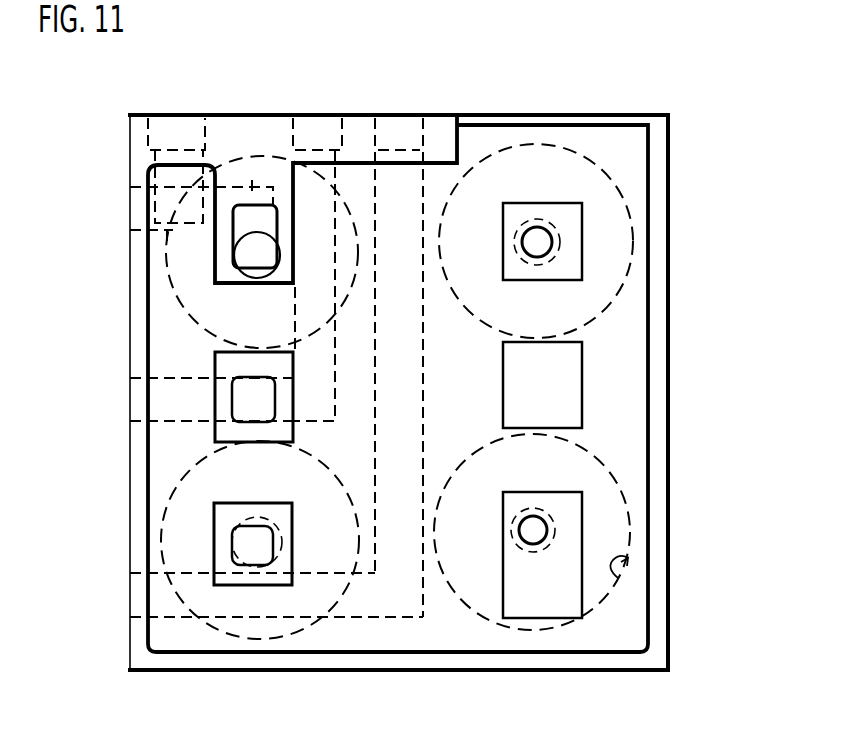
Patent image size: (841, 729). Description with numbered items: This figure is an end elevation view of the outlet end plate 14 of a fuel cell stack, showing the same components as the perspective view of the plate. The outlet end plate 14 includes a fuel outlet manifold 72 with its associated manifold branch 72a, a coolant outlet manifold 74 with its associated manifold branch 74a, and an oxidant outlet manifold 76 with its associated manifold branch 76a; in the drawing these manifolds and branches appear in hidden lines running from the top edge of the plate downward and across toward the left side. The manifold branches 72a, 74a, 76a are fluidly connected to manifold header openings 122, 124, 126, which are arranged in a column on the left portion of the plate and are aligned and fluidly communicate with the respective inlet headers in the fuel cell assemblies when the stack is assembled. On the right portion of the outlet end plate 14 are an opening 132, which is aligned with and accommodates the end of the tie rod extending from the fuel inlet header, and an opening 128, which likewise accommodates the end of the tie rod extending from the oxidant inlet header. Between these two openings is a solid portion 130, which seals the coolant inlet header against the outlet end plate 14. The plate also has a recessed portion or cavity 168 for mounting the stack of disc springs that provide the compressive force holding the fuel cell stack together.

The outlet end plate 14 is at (625, 183).
The fuel outlet manifold 72 is at (408, 130).
The manifold branch 72a is at (190, 617).
The coolant outlet manifold 74 is at (318, 131).
The manifold branch 74a is at (193, 378).
The oxidant outlet manifold 76 is at (188, 125).
The manifold branch 76a is at (252, 190).
The manifold header opening 122 is at (243, 541).
The manifold header opening 124 is at (252, 417).
The manifold header opening 126 is at (238, 218).
The opening 128 is at (540, 528).
The solid portion 130 is at (568, 403).
The opening 132 is at (540, 245).
The recessed portion or cavity 168 is at (610, 582).